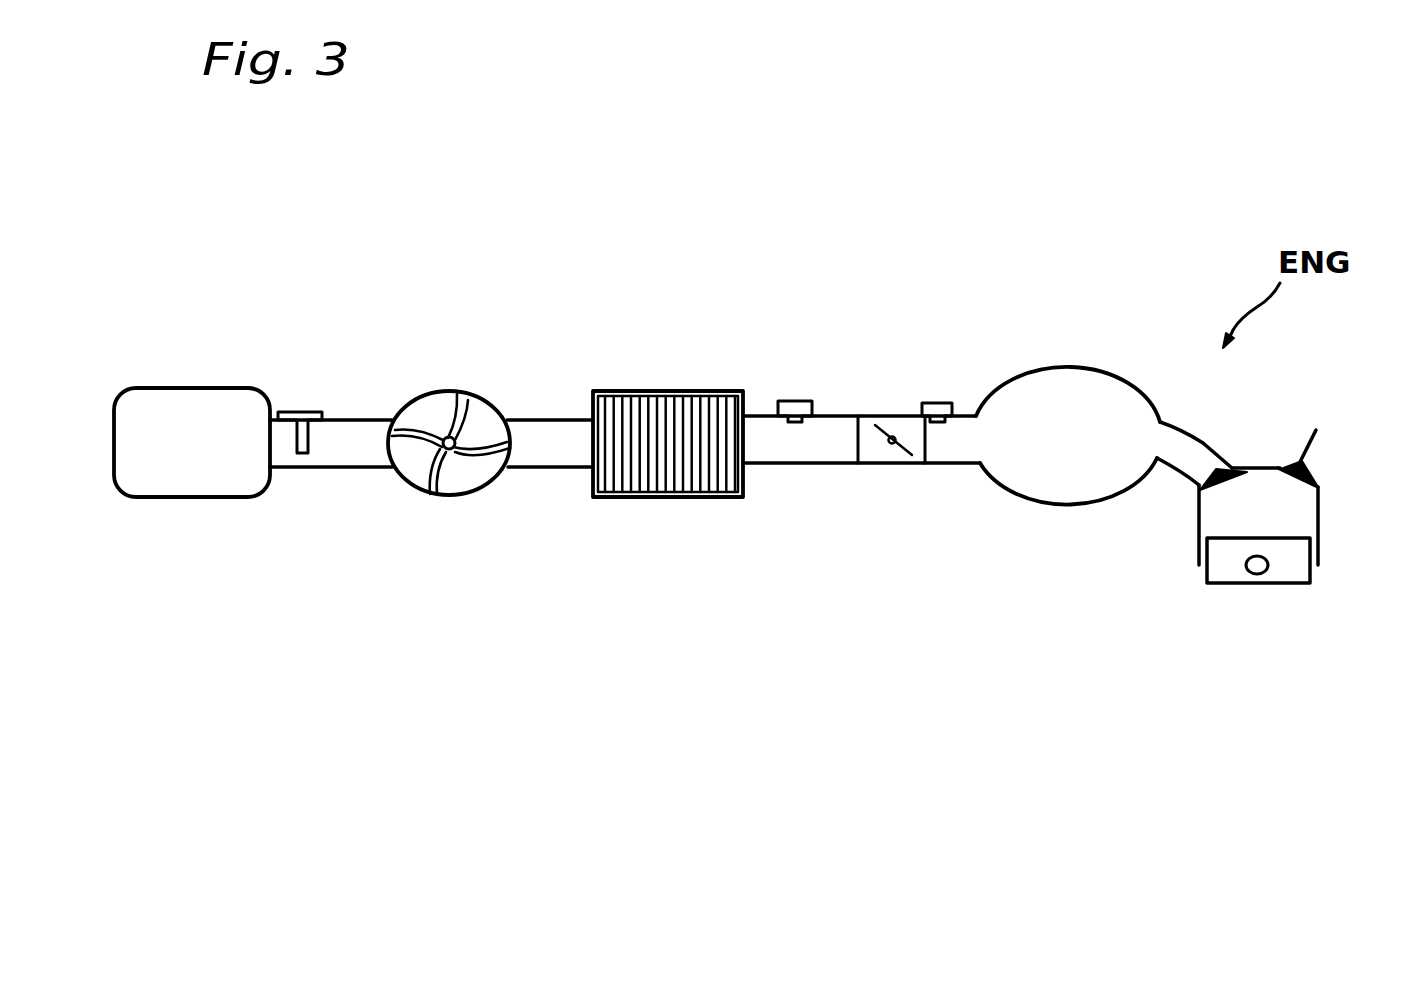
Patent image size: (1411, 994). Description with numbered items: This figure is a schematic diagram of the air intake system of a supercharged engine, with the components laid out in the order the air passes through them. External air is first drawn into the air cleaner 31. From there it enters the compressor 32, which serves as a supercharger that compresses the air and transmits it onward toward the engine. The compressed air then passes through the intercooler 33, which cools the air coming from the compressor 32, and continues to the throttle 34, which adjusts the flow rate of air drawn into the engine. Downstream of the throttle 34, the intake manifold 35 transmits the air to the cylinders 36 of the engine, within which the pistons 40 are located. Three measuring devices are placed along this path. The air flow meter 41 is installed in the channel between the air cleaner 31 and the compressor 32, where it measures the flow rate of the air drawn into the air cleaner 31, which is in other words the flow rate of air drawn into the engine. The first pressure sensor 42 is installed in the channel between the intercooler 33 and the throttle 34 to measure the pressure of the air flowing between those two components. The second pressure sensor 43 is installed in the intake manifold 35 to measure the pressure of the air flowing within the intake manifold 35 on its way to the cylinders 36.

The air cleaner 31 is at (190, 487).
The compressor 32 is at (423, 483).
The intercooler 33 is at (670, 483).
The throttle 34 is at (888, 454).
The intake manifold 35 is at (1072, 493).
The cylinders 36 is at (1305, 518).
The pistons 40 is at (1282, 573).
The air flow meter 41 is at (302, 412).
The first pressure sensor 42 is at (797, 401).
The second pressure sensor 43 is at (938, 403).